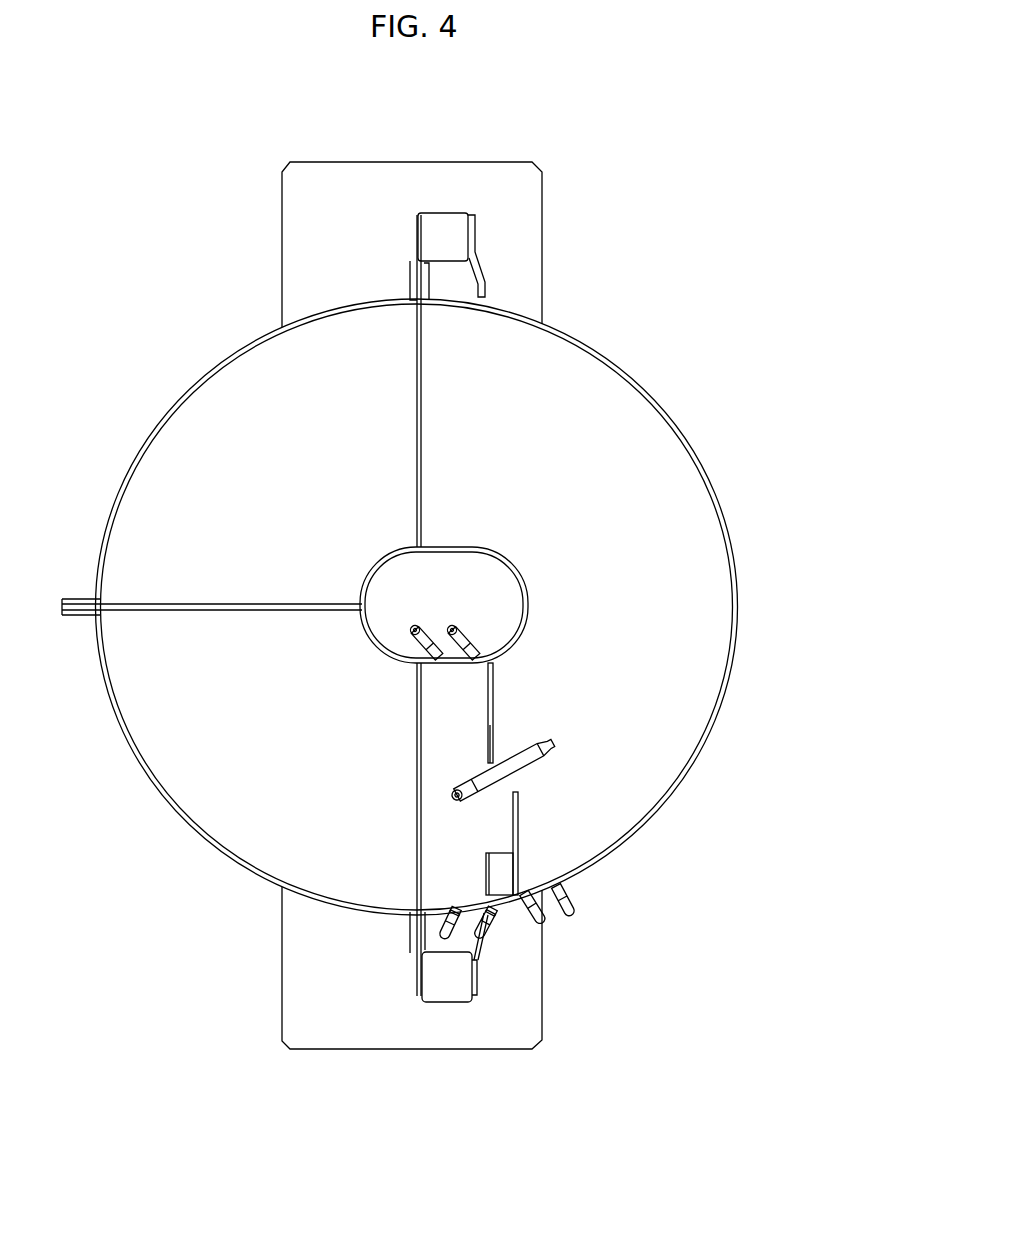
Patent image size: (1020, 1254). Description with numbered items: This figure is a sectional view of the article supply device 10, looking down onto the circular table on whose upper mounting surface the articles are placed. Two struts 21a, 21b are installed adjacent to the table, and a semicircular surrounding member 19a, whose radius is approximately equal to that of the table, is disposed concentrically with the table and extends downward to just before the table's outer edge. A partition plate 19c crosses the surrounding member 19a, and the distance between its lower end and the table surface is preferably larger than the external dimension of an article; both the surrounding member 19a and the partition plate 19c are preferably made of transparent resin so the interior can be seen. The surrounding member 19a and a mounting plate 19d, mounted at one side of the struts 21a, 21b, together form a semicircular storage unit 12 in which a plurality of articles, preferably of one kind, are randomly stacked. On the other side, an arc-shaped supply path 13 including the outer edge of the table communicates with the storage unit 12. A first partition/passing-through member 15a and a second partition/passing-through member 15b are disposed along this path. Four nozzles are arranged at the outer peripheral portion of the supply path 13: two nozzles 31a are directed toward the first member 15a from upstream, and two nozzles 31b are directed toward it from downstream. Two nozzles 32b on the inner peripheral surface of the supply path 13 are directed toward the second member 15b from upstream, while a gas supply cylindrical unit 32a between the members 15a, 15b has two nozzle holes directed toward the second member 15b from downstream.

The article supply device 10 is at (680, 142).
The storage unit 12 is at (301, 737).
The supply path 13 is at (577, 483).
The first partition/passing-through member 15a is at (518, 822).
The second partition/passing-through member 15b is at (493, 688).
The surrounding member 19a is at (158, 432).
The partition plate 19c is at (146, 606).
The mounting plate 19d is at (420, 353).
The strut 21a is at (442, 236).
The strut 21b is at (445, 982).
The nozzles 31a is at (487, 917).
The nozzles 31b is at (546, 924).
The gas supply cylindrical unit 32a is at (537, 755).
The nozzles 32b is at (466, 628).